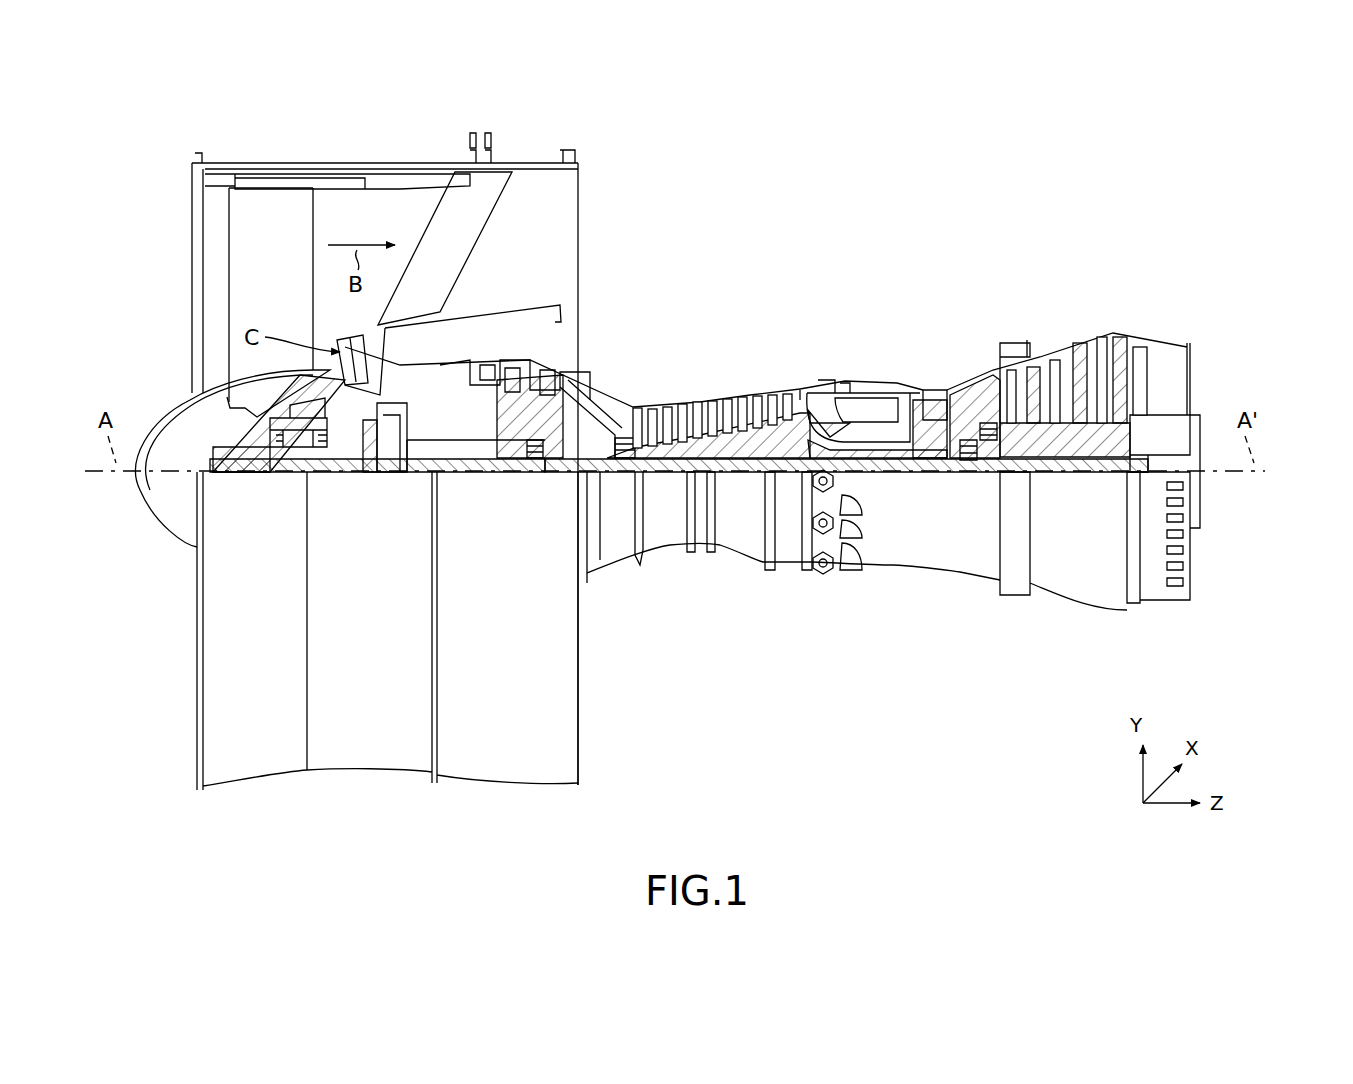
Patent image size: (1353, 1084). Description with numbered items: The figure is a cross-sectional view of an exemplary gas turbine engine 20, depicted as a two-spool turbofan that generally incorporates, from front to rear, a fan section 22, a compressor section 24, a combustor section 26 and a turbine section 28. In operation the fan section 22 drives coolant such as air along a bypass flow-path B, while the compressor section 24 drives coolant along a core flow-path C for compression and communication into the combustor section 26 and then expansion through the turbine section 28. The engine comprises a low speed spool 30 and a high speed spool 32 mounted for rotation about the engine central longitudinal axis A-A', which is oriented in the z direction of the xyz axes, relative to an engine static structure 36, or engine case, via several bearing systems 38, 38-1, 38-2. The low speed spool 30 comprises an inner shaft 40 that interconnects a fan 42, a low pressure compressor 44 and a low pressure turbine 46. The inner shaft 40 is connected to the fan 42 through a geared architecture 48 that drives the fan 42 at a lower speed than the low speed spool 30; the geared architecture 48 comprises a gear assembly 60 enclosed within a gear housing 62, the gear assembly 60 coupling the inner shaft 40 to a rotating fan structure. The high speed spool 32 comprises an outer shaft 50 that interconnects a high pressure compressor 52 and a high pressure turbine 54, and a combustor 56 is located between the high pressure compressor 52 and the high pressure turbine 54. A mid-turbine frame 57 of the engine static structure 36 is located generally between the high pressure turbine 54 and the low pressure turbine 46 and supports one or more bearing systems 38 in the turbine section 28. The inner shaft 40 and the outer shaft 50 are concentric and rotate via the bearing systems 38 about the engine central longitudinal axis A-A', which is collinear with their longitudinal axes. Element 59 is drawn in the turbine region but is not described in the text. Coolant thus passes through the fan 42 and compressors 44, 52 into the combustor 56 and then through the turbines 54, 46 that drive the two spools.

The gas turbine engine 20 is at (915, 200).
The fan section 22 is at (432, 140).
The compressor section 24 is at (440, 272).
The combustor section 26 is at (920, 272).
The turbine section 28 is at (1133, 272).
The low speed spool 30 is at (748, 480).
The high speed spool 32 is at (782, 440).
The engine static structure 36 is at (367, 748).
The bearing system 38 is at (980, 460).
The bearing system 38-1 is at (283, 455).
The bearing system 38-2 is at (532, 462).
The inner shaft 40 is at (604, 472).
The fan 42 is at (279, 289).
The low pressure compressor 44 is at (520, 365).
The low pressure turbine 46 is at (1045, 357).
The geared architecture 48 is at (396, 482).
The outer shaft 50 is at (868, 452).
The high pressure compressor 52 is at (712, 440).
The high pressure turbine 54 is at (935, 388).
The combustor 56 is at (860, 410).
The mid-turbine frame 57 is at (965, 395).
The airfoils 59 is at (985, 390).
The gear assembly 60 is at (410, 456).
The gear housing 62 is at (402, 426).